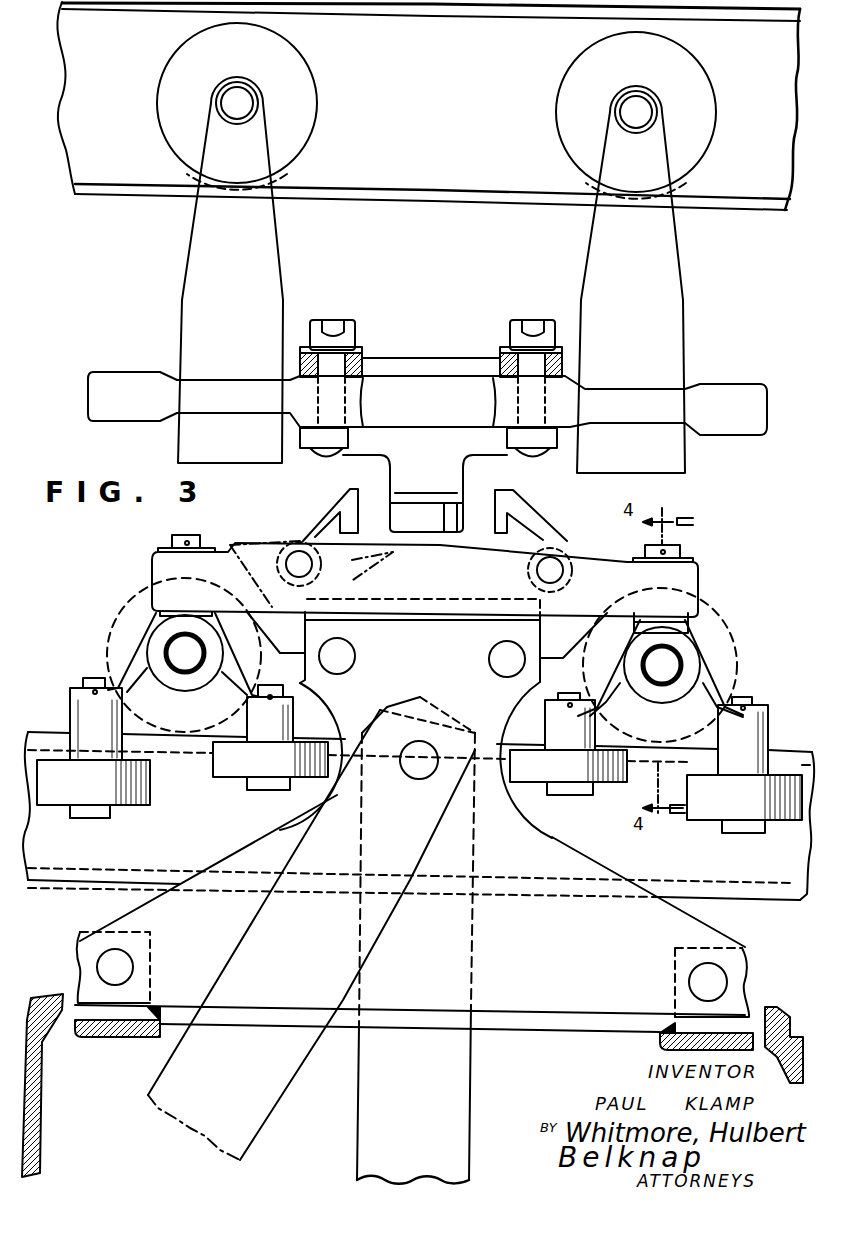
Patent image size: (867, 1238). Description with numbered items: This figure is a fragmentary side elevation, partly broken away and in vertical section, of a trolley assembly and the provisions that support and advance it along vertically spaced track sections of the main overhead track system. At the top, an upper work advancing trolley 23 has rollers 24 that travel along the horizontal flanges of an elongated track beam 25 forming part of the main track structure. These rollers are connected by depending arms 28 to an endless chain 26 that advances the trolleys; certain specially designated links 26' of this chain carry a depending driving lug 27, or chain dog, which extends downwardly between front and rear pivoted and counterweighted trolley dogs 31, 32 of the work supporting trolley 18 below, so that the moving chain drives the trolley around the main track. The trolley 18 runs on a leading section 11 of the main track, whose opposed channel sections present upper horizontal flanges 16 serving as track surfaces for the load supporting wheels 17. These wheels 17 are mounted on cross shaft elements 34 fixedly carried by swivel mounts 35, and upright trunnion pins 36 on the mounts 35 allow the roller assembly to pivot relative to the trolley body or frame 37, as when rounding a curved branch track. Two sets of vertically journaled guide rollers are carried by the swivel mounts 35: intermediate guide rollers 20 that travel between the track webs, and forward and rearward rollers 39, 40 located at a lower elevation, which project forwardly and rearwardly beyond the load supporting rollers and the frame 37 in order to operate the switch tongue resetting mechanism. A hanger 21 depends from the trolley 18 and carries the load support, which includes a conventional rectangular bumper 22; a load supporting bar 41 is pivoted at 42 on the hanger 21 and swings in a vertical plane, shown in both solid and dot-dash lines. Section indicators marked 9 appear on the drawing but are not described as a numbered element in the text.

The cross beam 9 is at (773, 893).
The leading section of main trolley supporting track 11 is at (781, 733).
The upper horizontal flanges 16 is at (97, 703).
The load supporting wheels 17 is at (128, 597).
The trolley 18 is at (705, 568).
The guide rollers 20 is at (257, 760).
The hanger 21 is at (527, 847).
The bumper 22 is at (42, 1117).
The upper work advancing trolley 23 is at (178, 237).
The rollers 24 is at (305, 104).
The track beam 25 is at (466, 200).
The endless chain 26 is at (427, 390).
The links 26' is at (431, 328).
The driving lug 27 is at (447, 482).
The depending arms 28 is at (268, 285).
The front trolley dog 31 is at (318, 530).
The rear trolley dog 32 is at (523, 512).
The cross shaft elements 34 is at (185, 667).
The swivel mounts 35 is at (225, 670).
The upright trunnion pins 36 is at (195, 537).
The trolley body or frame 37 is at (587, 553).
The forward guide roller 39 is at (120, 792).
The rearward guide roller 40 is at (713, 805).
The load supporting bar 41 is at (358, 1118).
The pivot 42 is at (415, 770).